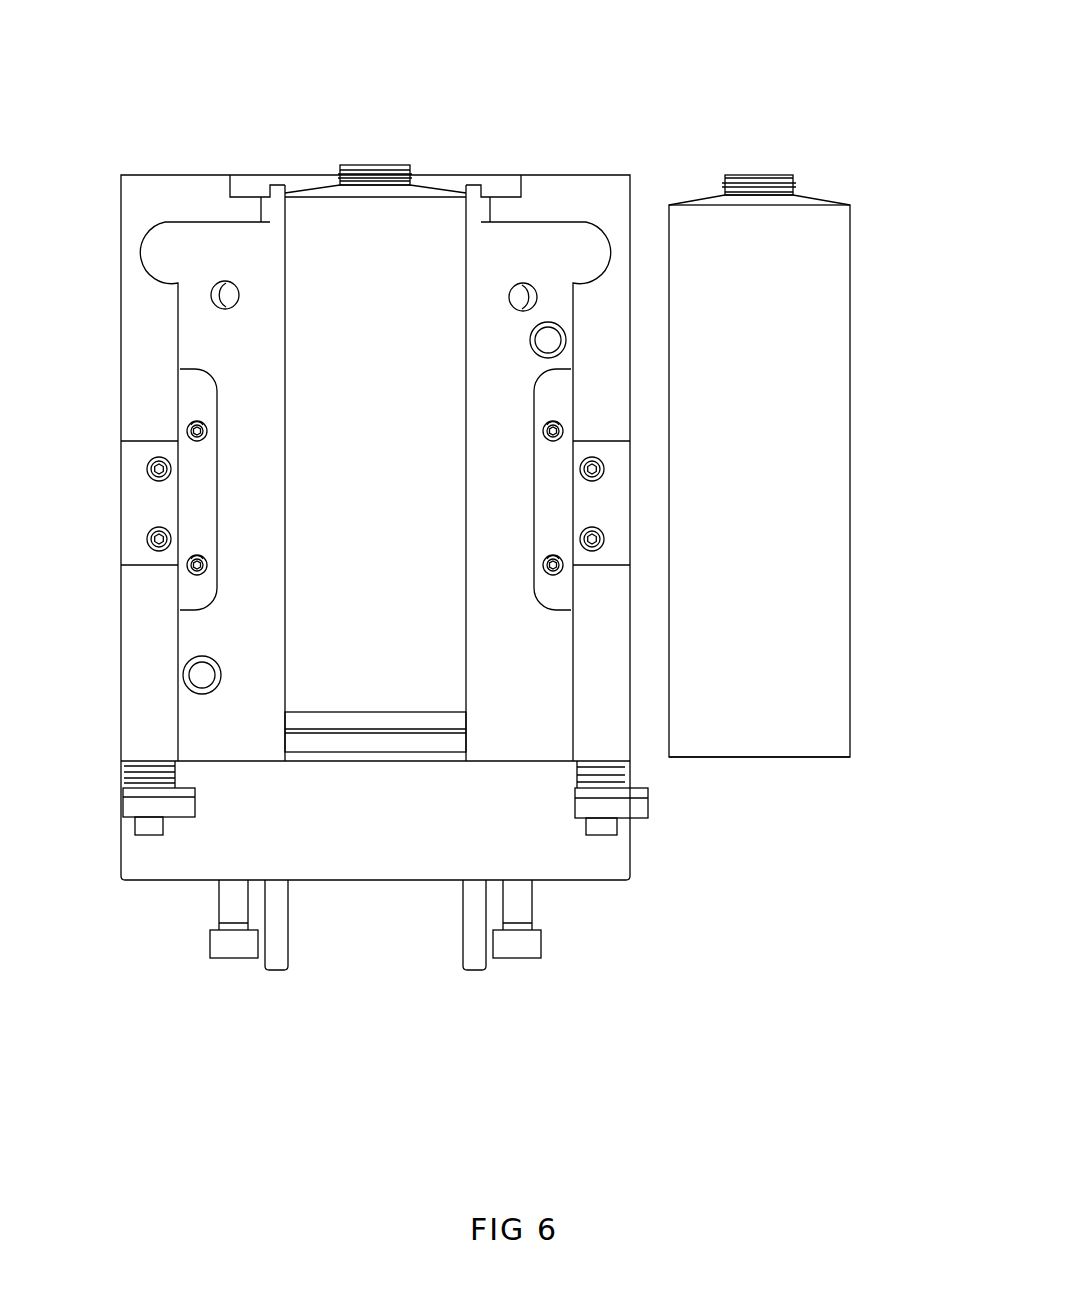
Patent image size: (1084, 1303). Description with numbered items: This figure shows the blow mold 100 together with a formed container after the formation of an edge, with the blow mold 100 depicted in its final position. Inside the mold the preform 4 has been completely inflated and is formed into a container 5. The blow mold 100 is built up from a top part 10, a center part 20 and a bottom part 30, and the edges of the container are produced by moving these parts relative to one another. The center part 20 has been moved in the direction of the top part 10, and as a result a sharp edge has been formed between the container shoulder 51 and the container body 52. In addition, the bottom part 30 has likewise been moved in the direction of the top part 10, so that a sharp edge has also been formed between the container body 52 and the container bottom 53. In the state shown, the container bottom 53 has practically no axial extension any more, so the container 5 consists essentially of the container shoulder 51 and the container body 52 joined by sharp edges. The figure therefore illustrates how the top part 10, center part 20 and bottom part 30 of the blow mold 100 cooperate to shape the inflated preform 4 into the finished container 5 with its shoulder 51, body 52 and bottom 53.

The blow mold 100 is at (596, 93).
The top part 10 is at (248, 182).
The center part 20 is at (242, 345).
The bottom part 30 is at (308, 727).
The preform 4 is at (427, 213).
The container 5 is at (624, 392).
The container shoulder 51 is at (888, 167).
The container body 52 is at (888, 750).
The container bottom 53 is at (888, 755).